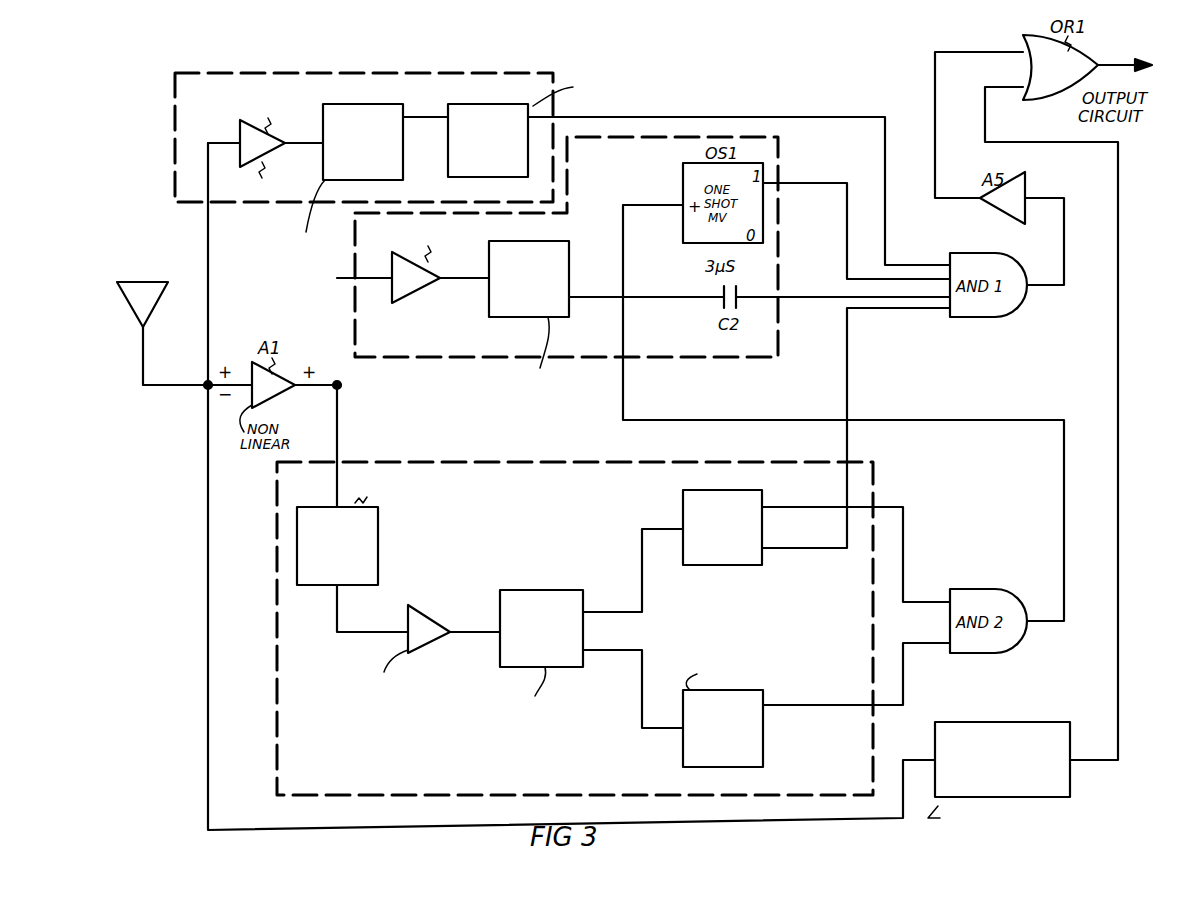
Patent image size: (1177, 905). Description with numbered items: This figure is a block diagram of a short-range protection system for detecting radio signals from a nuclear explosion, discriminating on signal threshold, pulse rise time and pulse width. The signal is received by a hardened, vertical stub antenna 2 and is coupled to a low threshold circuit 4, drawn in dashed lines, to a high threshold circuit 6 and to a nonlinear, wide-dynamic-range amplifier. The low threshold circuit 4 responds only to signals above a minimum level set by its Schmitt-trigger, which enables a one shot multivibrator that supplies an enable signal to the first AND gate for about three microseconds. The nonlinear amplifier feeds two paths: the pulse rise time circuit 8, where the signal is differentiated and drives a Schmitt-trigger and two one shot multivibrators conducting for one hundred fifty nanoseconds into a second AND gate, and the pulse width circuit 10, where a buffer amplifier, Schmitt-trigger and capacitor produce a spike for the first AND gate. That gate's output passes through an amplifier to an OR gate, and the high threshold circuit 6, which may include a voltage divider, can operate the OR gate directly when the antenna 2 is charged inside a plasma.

The antenna 2 is at (113, 305).
The low threshold circuit 4 is at (428, 156).
The high threshold circuit 6 is at (998, 722).
The pulse rise time circuit 8 is at (277, 553).
The pulse width circuit 10 is at (355, 242).